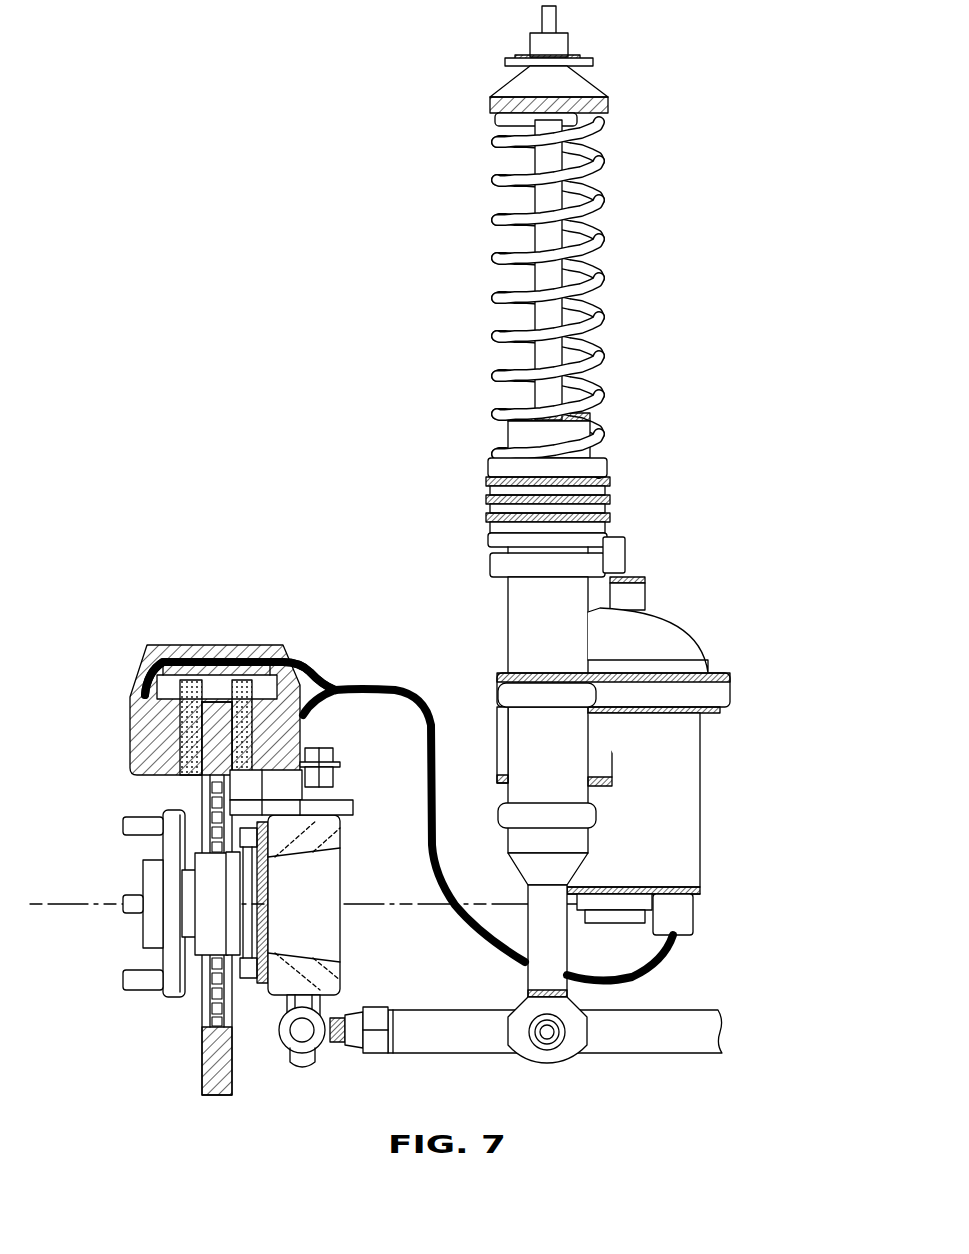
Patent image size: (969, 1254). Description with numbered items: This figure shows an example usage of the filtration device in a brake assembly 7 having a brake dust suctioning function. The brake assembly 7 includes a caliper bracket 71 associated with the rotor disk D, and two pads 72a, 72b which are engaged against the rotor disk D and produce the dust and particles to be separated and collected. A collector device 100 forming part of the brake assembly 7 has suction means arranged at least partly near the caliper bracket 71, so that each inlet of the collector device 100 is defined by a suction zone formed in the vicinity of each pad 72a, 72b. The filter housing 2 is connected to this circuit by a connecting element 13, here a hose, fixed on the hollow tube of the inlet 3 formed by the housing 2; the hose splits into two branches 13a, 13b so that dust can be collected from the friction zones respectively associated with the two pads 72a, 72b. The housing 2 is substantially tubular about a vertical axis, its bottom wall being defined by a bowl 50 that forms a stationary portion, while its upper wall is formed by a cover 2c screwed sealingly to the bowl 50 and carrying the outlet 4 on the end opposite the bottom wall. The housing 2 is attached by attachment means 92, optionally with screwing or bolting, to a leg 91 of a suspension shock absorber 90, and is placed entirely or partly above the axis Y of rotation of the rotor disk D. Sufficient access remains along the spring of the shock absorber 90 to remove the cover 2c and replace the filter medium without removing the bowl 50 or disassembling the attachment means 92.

The brake assembly 7 is at (408, 556).
The suspension shock absorber 90 is at (587, 534).
The outlet 4 is at (616, 553).
The cover 2c is at (681, 641).
The housing 2 is at (710, 798).
The attachment means 92 is at (504, 806).
The bowl 50 is at (688, 848).
The inlet 3 is at (680, 913).
The leg 91 is at (545, 968).
The connecting element 13 is at (430, 813).
The hose branch 13a is at (325, 706).
The hose branch 13b is at (301, 660).
The collector device 100 is at (194, 677).
The caliper bracket 71 is at (141, 737).
The pad 72a is at (187, 648).
The pad 72b is at (243, 648).
The rotor disk D is at (207, 1070).
The axis of rotation Y is at (61, 905).